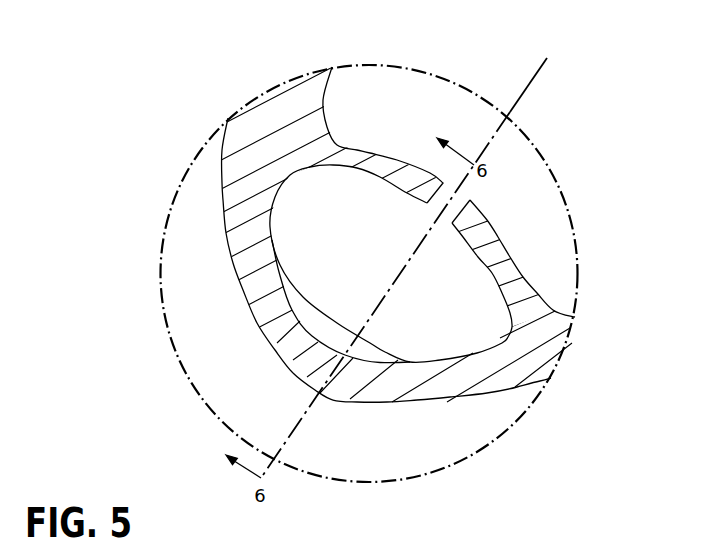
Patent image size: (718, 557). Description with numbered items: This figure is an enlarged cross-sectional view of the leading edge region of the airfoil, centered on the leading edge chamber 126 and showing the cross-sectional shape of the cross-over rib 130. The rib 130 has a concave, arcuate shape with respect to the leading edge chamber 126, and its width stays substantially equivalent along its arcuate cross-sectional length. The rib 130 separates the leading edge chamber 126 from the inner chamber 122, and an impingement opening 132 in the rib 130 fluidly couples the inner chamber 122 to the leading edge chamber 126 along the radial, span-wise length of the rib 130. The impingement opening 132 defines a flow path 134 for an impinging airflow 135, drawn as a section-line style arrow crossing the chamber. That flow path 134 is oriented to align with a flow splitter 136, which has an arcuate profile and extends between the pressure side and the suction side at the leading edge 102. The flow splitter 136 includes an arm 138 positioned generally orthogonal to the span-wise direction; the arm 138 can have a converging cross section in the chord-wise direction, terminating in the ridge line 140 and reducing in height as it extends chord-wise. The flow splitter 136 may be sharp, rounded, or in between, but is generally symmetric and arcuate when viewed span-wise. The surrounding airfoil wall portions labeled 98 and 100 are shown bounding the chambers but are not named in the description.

The outer wall 98 is at (487, 392).
The side wall 100 is at (222, 178).
The leading edge 102 is at (328, 398).
The inner chamber 122 is at (373, 122).
The leading edge chamber 126 is at (318, 231).
The rib 130 is at (513, 268).
The impingement opening 132 is at (460, 200).
The flow path 134 is at (528, 82).
The impinging airflow 135 is at (500, 130).
The flow splitter 136 is at (372, 354).
The arm 138 is at (297, 302).
The ridge line 140 is at (385, 350).